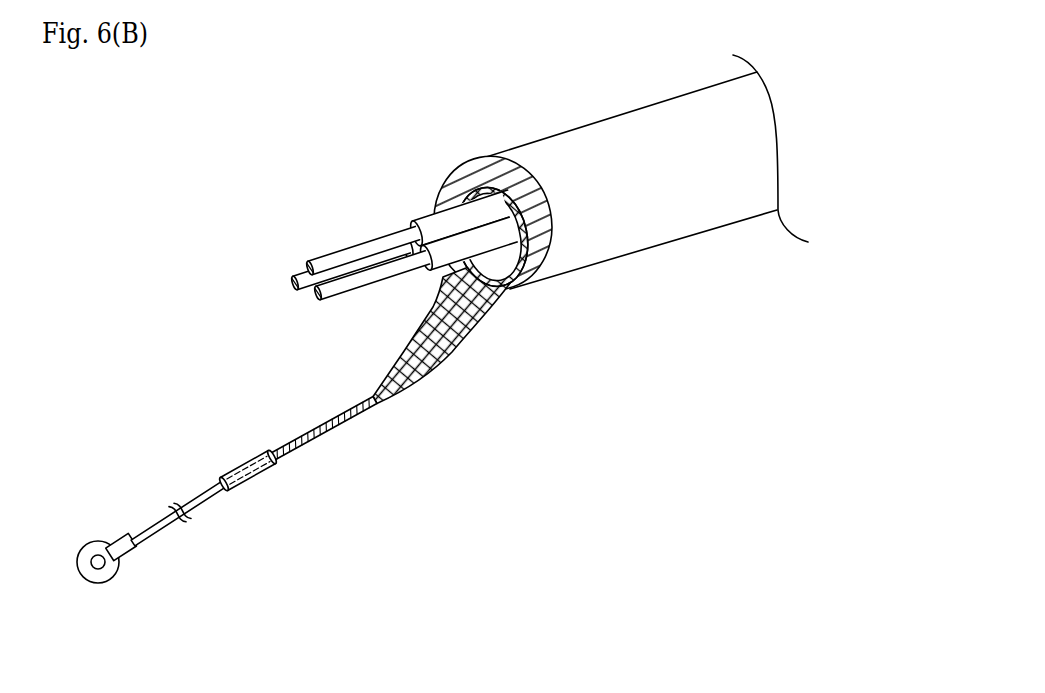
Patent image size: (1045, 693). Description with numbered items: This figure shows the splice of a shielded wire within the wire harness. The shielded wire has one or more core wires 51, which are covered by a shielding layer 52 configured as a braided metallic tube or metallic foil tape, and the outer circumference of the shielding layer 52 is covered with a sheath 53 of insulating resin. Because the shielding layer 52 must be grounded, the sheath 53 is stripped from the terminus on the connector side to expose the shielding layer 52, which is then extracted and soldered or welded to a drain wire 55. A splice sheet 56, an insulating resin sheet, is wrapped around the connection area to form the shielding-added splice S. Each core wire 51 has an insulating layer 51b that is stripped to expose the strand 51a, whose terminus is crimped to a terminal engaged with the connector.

The sheath 53 is at (490, 170).
The shielding layer 52 is at (447, 337).
The core wire 51 is at (366, 277).
The strand 51a is at (301, 266).
The insulating layer 51b is at (432, 273).
The drain wire 55 is at (208, 497).
The splice sheet 56 is at (304, 528).
The shielding-added splice S is at (257, 484).